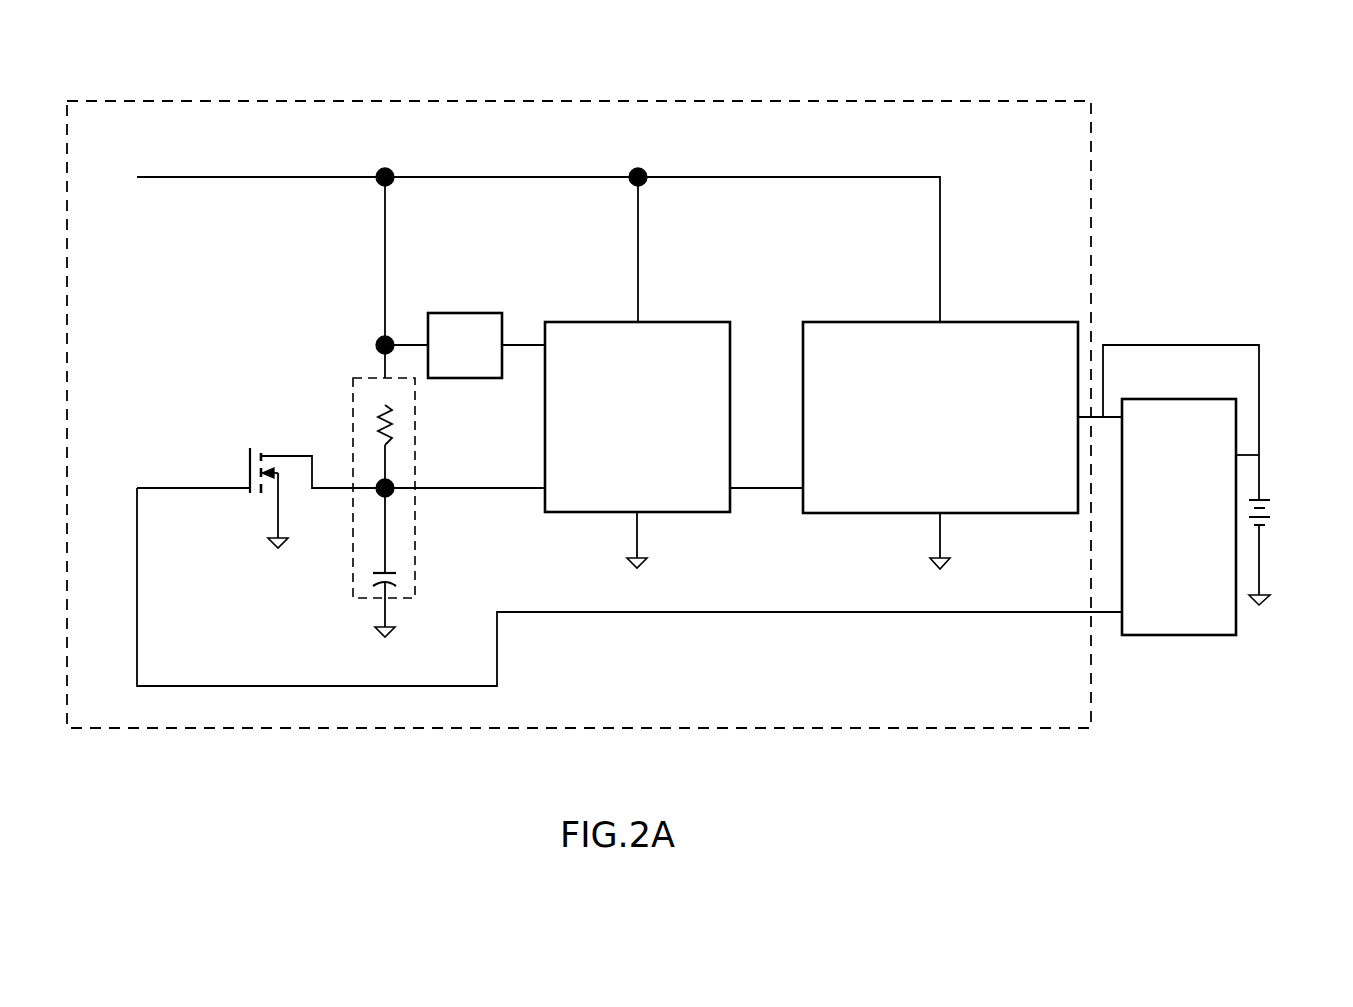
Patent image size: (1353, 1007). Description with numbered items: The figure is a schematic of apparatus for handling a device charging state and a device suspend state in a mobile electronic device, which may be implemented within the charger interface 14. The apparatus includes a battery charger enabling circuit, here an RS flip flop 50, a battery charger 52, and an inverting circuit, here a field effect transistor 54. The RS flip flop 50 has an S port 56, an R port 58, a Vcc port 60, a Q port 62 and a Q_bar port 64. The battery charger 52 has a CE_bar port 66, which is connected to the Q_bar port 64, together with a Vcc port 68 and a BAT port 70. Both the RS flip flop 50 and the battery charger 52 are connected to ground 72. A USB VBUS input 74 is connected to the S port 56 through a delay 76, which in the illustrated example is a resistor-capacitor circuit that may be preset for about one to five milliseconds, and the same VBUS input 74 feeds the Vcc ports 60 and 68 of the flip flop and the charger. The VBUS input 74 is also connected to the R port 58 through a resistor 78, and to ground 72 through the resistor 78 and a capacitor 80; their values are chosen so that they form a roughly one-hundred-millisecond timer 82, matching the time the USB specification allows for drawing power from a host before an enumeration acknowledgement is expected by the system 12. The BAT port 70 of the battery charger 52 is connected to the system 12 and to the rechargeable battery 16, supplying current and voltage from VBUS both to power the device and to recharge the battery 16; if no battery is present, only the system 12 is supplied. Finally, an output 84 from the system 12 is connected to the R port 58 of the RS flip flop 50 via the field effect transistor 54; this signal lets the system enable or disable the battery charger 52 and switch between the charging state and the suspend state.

The system 12 is at (1143, 627).
The charger interface 14 is at (380, 751).
The rechargeable battery 16 is at (1270, 526).
The RS flip flop 50 is at (652, 428).
The battery charger 52 is at (858, 372).
The field effect transistor 54 is at (278, 448).
The S port 56 is at (561, 328).
The R port 58 is at (568, 500).
The Vcc port 60 is at (653, 320).
The Q port 62 is at (720, 344).
The Q_bar port 64 is at (692, 500).
The CE_bar port 66 is at (850, 510).
The Vcc port 68 is at (967, 338).
The BAT port 70 is at (1042, 430).
The ground 72 is at (273, 549).
The USB VBUS input 74 is at (159, 142).
The delay 76 is at (446, 323).
The resistor 78 is at (403, 425).
The capacitor 80 is at (400, 577).
The timer 82 is at (366, 380).
The output 84 is at (180, 453).